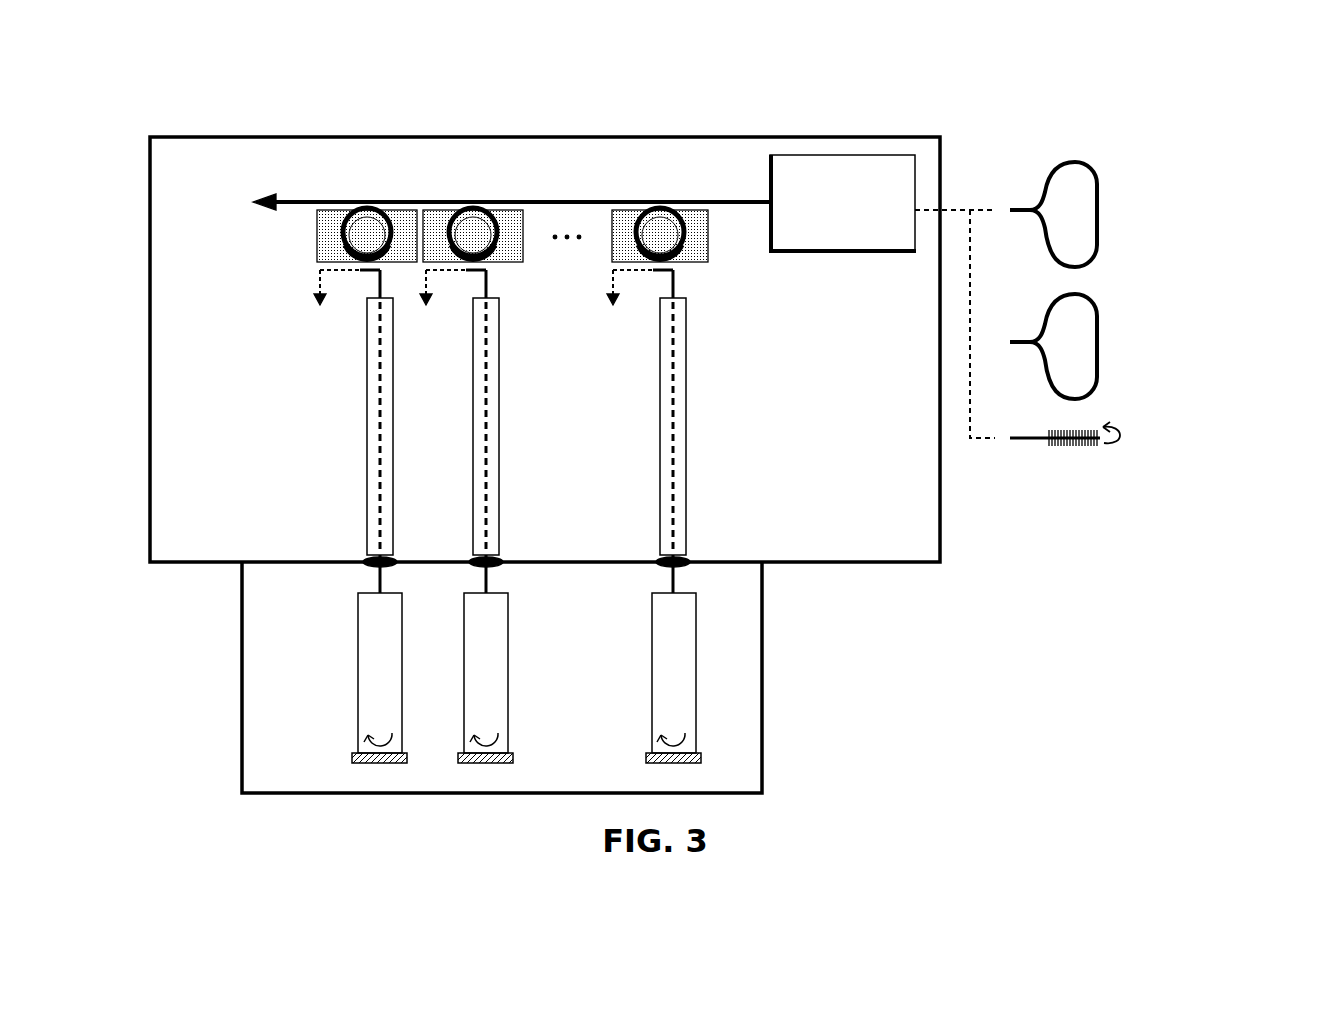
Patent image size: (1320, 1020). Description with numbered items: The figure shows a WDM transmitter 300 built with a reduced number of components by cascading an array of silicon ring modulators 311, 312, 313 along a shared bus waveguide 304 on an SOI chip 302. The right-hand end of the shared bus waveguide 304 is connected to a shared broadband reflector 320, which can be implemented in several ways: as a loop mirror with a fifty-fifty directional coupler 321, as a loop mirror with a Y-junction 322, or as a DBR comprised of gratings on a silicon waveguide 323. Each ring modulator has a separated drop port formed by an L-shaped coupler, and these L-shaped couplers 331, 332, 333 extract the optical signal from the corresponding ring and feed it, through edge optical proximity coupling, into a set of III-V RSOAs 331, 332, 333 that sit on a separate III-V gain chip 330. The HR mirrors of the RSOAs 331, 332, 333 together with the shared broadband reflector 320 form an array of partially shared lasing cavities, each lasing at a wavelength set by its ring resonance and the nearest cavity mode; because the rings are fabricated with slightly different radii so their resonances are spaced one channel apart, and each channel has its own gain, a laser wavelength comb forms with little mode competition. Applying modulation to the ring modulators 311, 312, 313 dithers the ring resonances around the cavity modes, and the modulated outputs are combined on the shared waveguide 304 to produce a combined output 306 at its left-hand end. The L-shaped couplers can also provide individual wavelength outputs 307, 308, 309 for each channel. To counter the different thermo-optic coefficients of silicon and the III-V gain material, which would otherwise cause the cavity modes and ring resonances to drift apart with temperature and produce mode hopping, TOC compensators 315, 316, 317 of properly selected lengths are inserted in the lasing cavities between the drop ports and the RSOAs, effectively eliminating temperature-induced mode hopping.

The WDM transmitter 300 is at (221, 111).
The SOI chip 302 is at (545, 349).
The shared bus waveguide 304 is at (520, 189).
The combined output 306 is at (222, 202).
The individual wavelength output 307 is at (345, 345).
The individual wavelength output 308 is at (450, 345).
The individual wavelength output 309 is at (638, 345).
The ring modulator 311 is at (367, 207).
The ring modulator 312 is at (473, 207).
The ring modulator 313 is at (660, 207).
The TOC compensator 315 is at (366, 412).
The TOC compensator 316 is at (473, 412).
The TOC compensator 317 is at (660, 412).
The shared broadband reflector 320 is at (843, 204).
The loop mirror with 50/50 directional coupler 321 is at (1144, 214).
The loop mirror with Y-junction 322 is at (1144, 346).
The DBR on silicon waveguide 323 is at (1127, 436).
The III-V gain chip 330 is at (502, 677).
The RSOA 331 is at (378, 518).
The RSOA 332 is at (484, 518).
The RSOA 333 is at (671, 518).